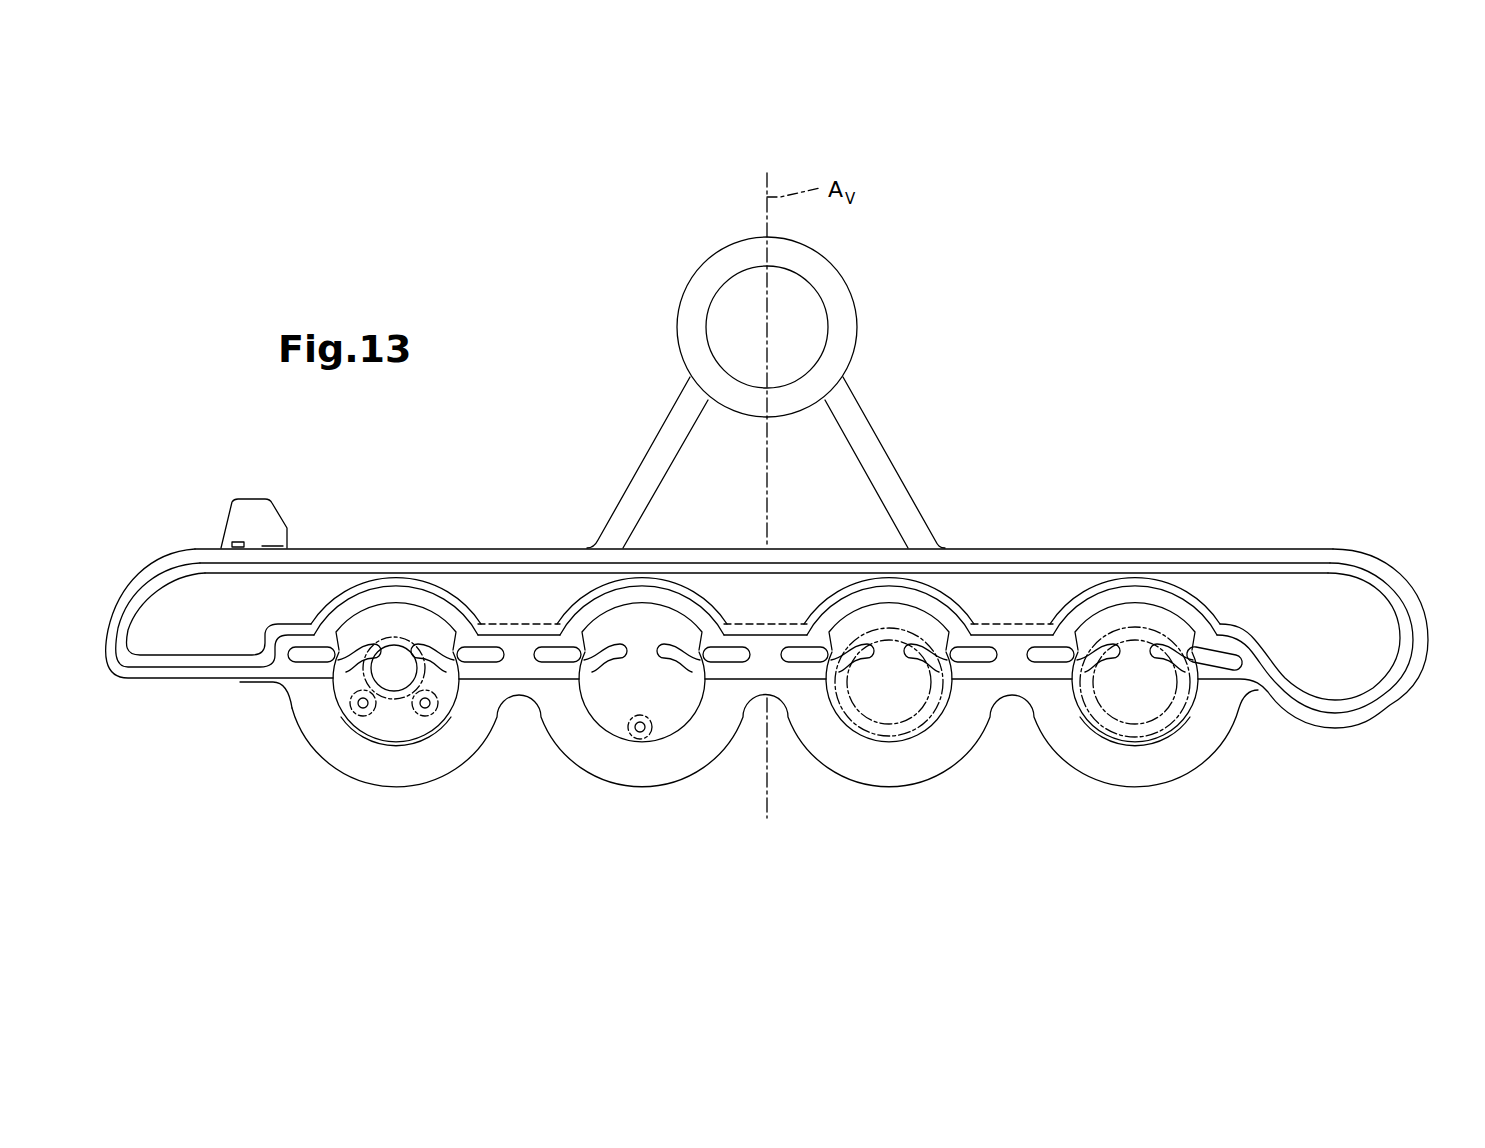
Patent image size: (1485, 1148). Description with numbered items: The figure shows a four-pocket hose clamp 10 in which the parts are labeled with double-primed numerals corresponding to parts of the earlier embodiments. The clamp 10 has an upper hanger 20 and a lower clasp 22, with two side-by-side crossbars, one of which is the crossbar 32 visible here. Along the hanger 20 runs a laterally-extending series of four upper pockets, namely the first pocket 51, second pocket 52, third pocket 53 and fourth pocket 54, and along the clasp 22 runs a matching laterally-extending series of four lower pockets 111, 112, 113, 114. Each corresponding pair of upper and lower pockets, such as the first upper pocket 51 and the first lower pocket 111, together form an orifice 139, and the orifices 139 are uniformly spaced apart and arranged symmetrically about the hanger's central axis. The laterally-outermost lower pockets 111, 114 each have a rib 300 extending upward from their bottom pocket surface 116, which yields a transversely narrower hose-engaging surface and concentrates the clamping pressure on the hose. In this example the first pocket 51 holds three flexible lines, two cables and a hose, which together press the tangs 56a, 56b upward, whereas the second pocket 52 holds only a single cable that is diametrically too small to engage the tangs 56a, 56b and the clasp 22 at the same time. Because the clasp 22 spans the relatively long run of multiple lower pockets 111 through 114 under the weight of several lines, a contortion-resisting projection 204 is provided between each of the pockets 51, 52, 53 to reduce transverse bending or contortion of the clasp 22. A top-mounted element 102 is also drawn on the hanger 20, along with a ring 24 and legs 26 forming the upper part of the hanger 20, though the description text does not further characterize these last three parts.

The clamp 10 is at (1030, 374).
The hanger 20 is at (925, 496).
The clasp 22 is at (1223, 763).
The ring 24 is at (857, 305).
The leg 26 is at (878, 425).
The crossbar 32 is at (1407, 588).
The first upper pocket 51 is at (393, 612).
The second upper pocket 52 is at (648, 612).
The third upper pocket 53 is at (892, 612).
The fourth upper pocket 54 is at (1138, 608).
The tang 56a is at (367, 630).
The tang 56b is at (417, 633).
The mounting lug 102 is at (222, 512).
The first lower pocket 111 is at (377, 725).
The second lower pocket 112 is at (613, 727).
The third lower pocket 113 is at (867, 728).
The fourth lower pocket 114 is at (1123, 713).
The bottom pocket surface 116 is at (433, 727).
The orifice 139 is at (1135, 682).
The contortion-resisting projection 204 is at (1020, 623).
The rib 300 is at (393, 730).